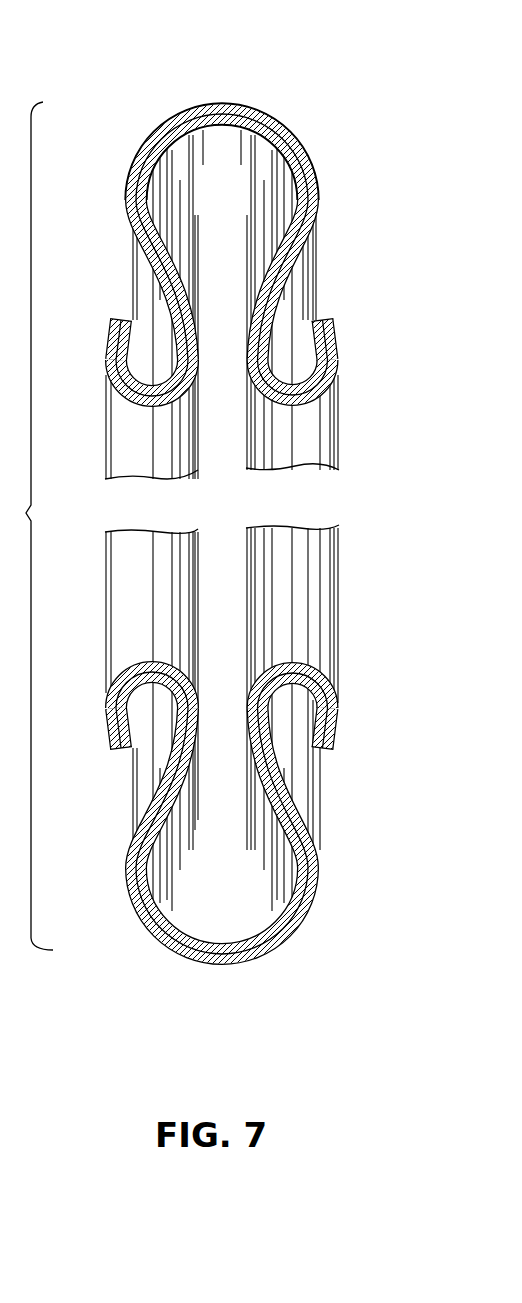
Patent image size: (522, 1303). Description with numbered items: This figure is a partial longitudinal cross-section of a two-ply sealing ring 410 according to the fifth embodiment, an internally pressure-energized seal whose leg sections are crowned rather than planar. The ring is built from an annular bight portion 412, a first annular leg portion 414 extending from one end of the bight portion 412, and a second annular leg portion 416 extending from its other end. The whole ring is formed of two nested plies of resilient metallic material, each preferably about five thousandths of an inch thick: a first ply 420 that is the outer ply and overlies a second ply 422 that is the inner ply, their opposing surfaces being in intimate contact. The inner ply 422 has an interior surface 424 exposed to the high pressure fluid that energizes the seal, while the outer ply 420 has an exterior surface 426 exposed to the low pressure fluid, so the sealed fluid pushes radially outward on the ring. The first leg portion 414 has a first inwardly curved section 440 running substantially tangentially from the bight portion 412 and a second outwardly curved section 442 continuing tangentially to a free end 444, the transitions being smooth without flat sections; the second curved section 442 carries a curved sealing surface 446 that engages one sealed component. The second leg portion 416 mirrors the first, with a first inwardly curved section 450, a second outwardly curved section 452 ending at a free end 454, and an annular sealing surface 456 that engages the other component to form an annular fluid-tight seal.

The two-ply sealing ring 410 is at (275, 96).
The annular bight portion 412 is at (218, 102).
The first annular leg portion 414 is at (128, 470).
The second annular leg portion 416 is at (319, 467).
The first ply 420 is at (300, 114).
The second ply 422 is at (320, 156).
The interior surface 424 is at (284, 222).
The exterior surface 426 is at (300, 263).
The first inwardly curved section 440 is at (178, 266).
The second outwardly curved section 442 is at (134, 402).
The free end 444 is at (119, 317).
The curved sealing surface 446 is at (106, 360).
The first inwardly curved section 450 is at (247, 320).
The second outwardly curved section 452 is at (286, 406).
The free end 454 is at (322, 320).
The annular sealing surface 456 is at (339, 354).